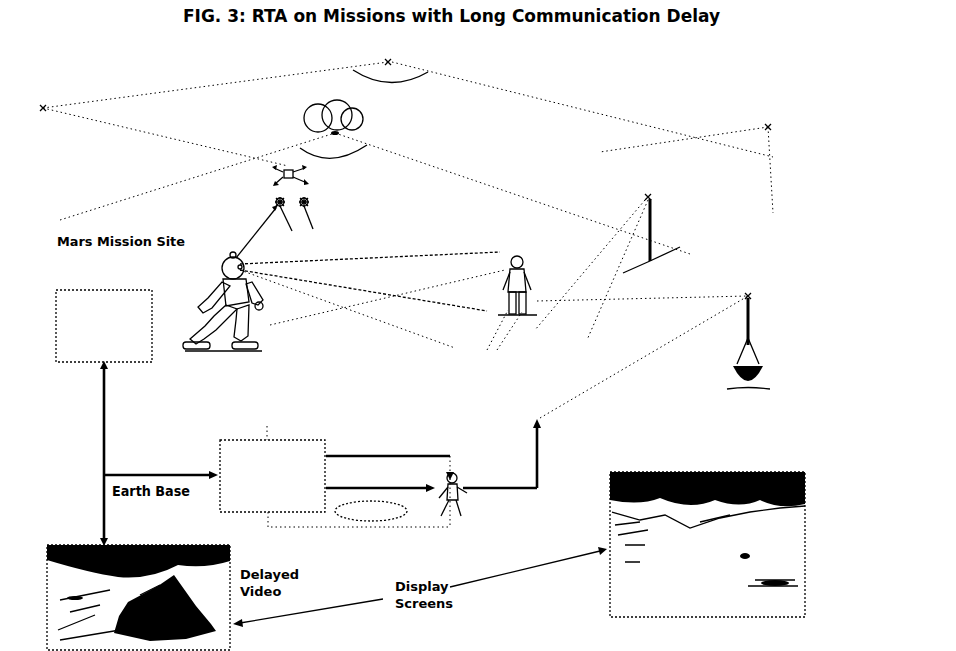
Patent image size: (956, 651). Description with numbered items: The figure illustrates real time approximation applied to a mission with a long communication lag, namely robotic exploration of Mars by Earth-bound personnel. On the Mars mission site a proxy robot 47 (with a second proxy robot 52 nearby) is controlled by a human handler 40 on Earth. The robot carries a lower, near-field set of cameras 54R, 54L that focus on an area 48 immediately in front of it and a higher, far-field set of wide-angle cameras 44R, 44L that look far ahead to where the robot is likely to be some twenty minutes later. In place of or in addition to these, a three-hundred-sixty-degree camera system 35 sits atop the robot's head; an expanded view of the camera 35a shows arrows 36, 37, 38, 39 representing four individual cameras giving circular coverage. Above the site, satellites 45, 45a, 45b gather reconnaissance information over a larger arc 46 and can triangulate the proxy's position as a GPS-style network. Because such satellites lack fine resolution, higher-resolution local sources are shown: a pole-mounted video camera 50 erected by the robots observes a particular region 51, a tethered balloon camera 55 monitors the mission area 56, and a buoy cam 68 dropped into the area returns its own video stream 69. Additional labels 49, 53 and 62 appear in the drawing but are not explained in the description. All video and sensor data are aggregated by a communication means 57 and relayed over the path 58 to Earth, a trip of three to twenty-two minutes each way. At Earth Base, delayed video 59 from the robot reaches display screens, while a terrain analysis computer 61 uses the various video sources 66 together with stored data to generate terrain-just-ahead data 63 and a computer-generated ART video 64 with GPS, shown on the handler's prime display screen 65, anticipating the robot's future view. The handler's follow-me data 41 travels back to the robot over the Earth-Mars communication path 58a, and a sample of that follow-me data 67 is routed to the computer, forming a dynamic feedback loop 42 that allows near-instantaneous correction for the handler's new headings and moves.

The 360-degree camera system 35 is at (229, 256).
The expanded view of the 360-degree camera 35a is at (288, 169).
The arrow representing individual camera 36 is at (271, 168).
The arrow representing individual camera 37 is at (271, 185).
The arrow representing individual camera 38 is at (309, 168).
The arrow representing individual camera 39 is at (312, 185).
The human handler 40 is at (461, 481).
The follow me data 41 is at (540, 490).
The dynamic feedback loop 42 is at (408, 512).
The right far-field camera 44R is at (275, 203).
The left far-field camera 44L is at (309, 202).
The satellite 45 is at (384, 61).
The satellite 45a is at (47, 105).
The satellite 45b is at (764, 124).
The gathered information arc 46 is at (390, 80).
The proxy robot 47 is at (210, 285).
The area immediately in front of the robot 48 is at (290, 335).
The camera view cone 49 is at (402, 258).
The pole-mounted video camera 50 is at (658, 201).
The observed region 51 is at (608, 291).
The proxy robot 52 is at (514, 256).
The view cone bracket 53 is at (500, 312).
The right near-field camera 54R is at (292, 228).
The left near-field camera 54L is at (320, 221).
The balloon camera 55 is at (362, 120).
The mission area 56 is at (333, 155).
The communication means 57 is at (103, 289).
The path 58 is at (122, 416).
The Earth-Mars communication path 58a is at (541, 447).
The delayed video 59 is at (106, 538).
The terrain analysis computer 61 is at (322, 440).
The stored data 62 is at (274, 416).
The terrain-just-ahead data 63 is at (342, 453).
The ART video 64 is at (380, 479).
The prime display screen 65 is at (609, 528).
The video sources 66 is at (128, 473).
The sample of follow me data 67 is at (267, 517).
The buoy cam 68 is at (747, 299).
The video stream 69 is at (686, 334).